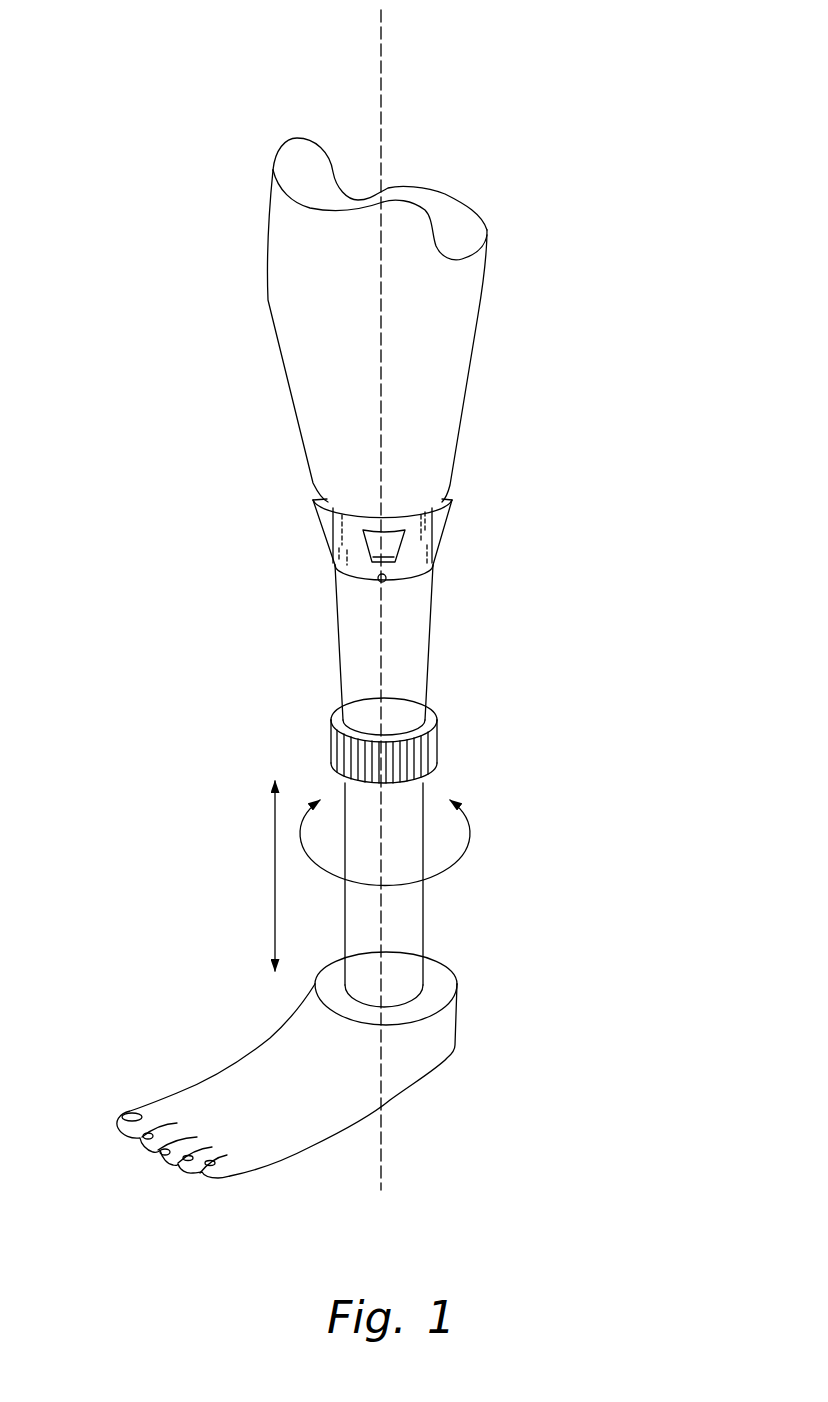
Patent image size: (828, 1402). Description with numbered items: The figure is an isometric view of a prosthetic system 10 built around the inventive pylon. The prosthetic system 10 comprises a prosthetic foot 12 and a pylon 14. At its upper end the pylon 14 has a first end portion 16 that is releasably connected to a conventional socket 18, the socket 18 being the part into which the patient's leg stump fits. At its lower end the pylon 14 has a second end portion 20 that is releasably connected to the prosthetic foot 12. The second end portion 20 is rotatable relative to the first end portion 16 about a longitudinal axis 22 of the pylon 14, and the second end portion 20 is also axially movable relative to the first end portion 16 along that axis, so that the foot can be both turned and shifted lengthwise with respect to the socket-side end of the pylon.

The prosthetic system 10 is at (548, 612).
The prosthetic foot 12 is at (443, 1102).
The pylon 14 is at (151, 494).
The first end portion 16 is at (470, 504).
The socket 18 is at (480, 332).
The second end portion 20 is at (442, 908).
The longitudinal axis 22 is at (381, 110).